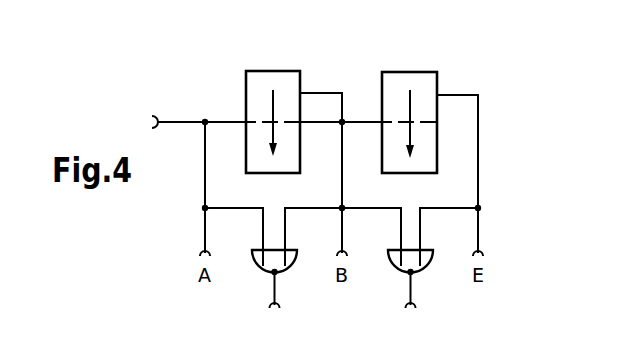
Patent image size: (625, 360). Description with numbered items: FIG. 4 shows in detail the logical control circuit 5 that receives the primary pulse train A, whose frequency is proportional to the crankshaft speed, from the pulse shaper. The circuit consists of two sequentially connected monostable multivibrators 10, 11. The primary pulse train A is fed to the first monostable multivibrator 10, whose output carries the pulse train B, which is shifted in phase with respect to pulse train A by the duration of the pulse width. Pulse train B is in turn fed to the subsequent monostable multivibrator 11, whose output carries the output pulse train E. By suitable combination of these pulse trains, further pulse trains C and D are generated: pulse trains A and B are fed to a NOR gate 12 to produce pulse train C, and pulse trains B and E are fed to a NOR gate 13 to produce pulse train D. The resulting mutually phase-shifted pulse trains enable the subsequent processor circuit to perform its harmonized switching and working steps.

The logical control circuit 5 is at (343, 64).
The first monostable multivibrator 10 is at (261, 80).
The second monostable multivibrator 11 is at (401, 82).
The NOR gate 12 is at (257, 258).
The NOR gate 13 is at (428, 260).